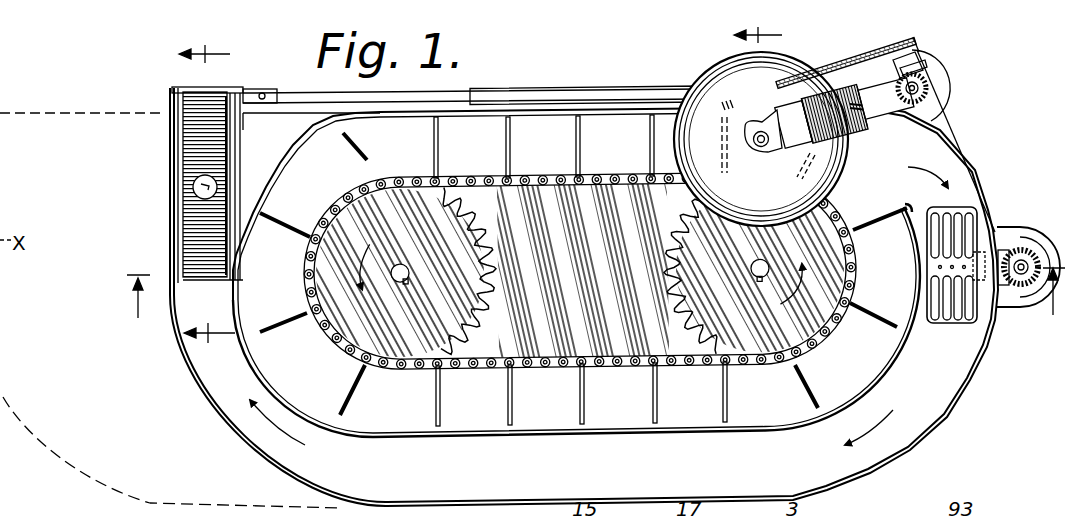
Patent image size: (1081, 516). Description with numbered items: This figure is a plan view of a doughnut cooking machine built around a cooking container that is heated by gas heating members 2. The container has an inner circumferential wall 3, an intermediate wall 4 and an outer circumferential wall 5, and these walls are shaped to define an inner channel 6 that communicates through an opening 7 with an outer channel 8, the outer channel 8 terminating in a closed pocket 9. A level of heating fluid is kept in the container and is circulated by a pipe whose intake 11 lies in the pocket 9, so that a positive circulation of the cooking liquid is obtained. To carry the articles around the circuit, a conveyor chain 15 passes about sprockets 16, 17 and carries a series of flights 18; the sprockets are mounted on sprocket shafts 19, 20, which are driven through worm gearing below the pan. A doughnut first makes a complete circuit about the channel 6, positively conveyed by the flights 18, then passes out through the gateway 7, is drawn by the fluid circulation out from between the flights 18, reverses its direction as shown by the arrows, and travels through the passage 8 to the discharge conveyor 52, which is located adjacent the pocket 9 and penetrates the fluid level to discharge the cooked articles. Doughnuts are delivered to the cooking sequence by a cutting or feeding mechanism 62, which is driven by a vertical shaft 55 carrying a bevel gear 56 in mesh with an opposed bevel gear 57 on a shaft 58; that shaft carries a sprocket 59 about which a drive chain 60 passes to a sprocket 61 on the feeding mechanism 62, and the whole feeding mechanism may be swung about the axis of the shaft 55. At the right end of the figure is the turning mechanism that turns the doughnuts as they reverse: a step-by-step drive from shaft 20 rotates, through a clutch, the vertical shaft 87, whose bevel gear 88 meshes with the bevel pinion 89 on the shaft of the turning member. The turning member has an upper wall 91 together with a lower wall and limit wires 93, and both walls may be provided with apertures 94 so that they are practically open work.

The gas heating members 2 is at (594, 306).
The inner circumferential wall 3 is at (769, 37).
The intermediate wall 4 is at (371, 438).
The outer circumferential wall 5 is at (603, 108).
The inner channel 6 is at (283, 399).
The opening 7 is at (896, 305).
The outer channel 8 is at (580, 278).
The closed pocket 9 is at (225, 197).
The intake 11 is at (200, 189).
The conveyor chain 15 is at (536, 362).
The sprocket 16 is at (494, 292).
The sprocket 17 is at (672, 281).
The flights 18 is at (513, 399).
The sprocket shaft 19 is at (408, 269).
The sprocket shaft 20 is at (758, 264).
The conveyor 52 is at (220, 160).
The vertical shaft 55 is at (935, 102).
The bevel gear 56 is at (930, 90).
The bevel gear 57 is at (922, 72).
The shaft 58 is at (912, 52).
The sprocket 59 is at (905, 45).
The drive chain 60 is at (846, 61).
The sprocket 61 is at (778, 85).
The cutting or feeding mechanism 62 is at (708, 65).
The vertical shaft 87 is at (1005, 306).
The bevel gear 88 is at (1037, 302).
The bevel pinion 89 is at (1022, 250).
The upper wall 91 is at (932, 336).
The limit wires 93 is at (940, 266).
The apertures 94 is at (957, 316).